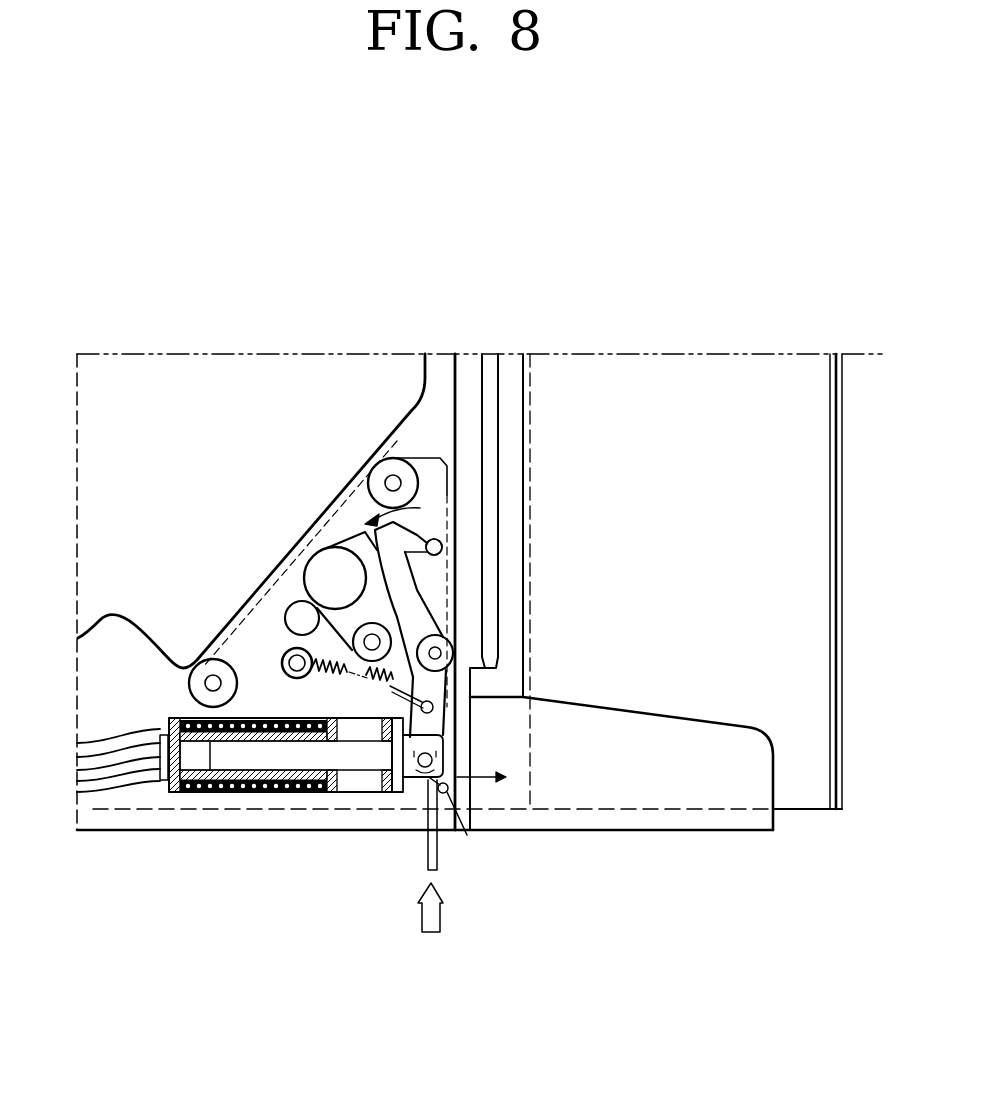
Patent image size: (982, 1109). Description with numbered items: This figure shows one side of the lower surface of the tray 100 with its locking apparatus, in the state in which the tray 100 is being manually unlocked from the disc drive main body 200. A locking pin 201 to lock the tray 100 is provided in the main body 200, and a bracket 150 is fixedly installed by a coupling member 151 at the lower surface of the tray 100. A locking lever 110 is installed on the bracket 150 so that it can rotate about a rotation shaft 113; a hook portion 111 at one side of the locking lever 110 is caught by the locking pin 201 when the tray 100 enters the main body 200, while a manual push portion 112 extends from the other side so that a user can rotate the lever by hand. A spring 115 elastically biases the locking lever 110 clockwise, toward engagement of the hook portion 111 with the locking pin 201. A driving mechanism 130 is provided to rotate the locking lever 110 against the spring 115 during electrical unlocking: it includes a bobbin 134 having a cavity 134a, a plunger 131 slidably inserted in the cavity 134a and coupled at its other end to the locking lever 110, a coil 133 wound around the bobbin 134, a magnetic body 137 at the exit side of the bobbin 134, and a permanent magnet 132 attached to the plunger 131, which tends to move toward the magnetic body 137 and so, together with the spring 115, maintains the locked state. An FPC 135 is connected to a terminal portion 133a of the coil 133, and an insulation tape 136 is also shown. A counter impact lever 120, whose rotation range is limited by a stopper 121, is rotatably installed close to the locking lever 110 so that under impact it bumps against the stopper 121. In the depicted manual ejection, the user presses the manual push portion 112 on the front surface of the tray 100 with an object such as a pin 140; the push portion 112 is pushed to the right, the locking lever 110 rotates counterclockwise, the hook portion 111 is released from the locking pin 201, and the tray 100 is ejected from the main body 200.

The tray 100 is at (663, 820).
The locking lever 110 is at (446, 696).
The hook portion 111 is at (442, 541).
The manual push portion 112 is at (447, 795).
The rotation shaft 113 is at (454, 655).
The spring 115 is at (292, 650).
The counter impact lever 120 is at (363, 540).
The stopper 121 is at (290, 610).
The driving mechanism 130 is at (128, 718).
The plunger 131 is at (190, 721).
The permanent magnet 132 is at (377, 793).
The coil 133 is at (228, 752).
The terminal portion 133a is at (150, 783).
The bobbin 134 is at (170, 793).
The cavity 134a is at (211, 793).
The FPC 135 is at (88, 795).
The insulation tape 136 is at (273, 793).
The magnetic body 137 is at (312, 793).
The pin 140 is at (425, 848).
The bracket 150 is at (448, 498).
The coupling member 151 is at (390, 480).
The disc drive main body 200 is at (802, 800).
The locking pin 201 is at (441, 551).